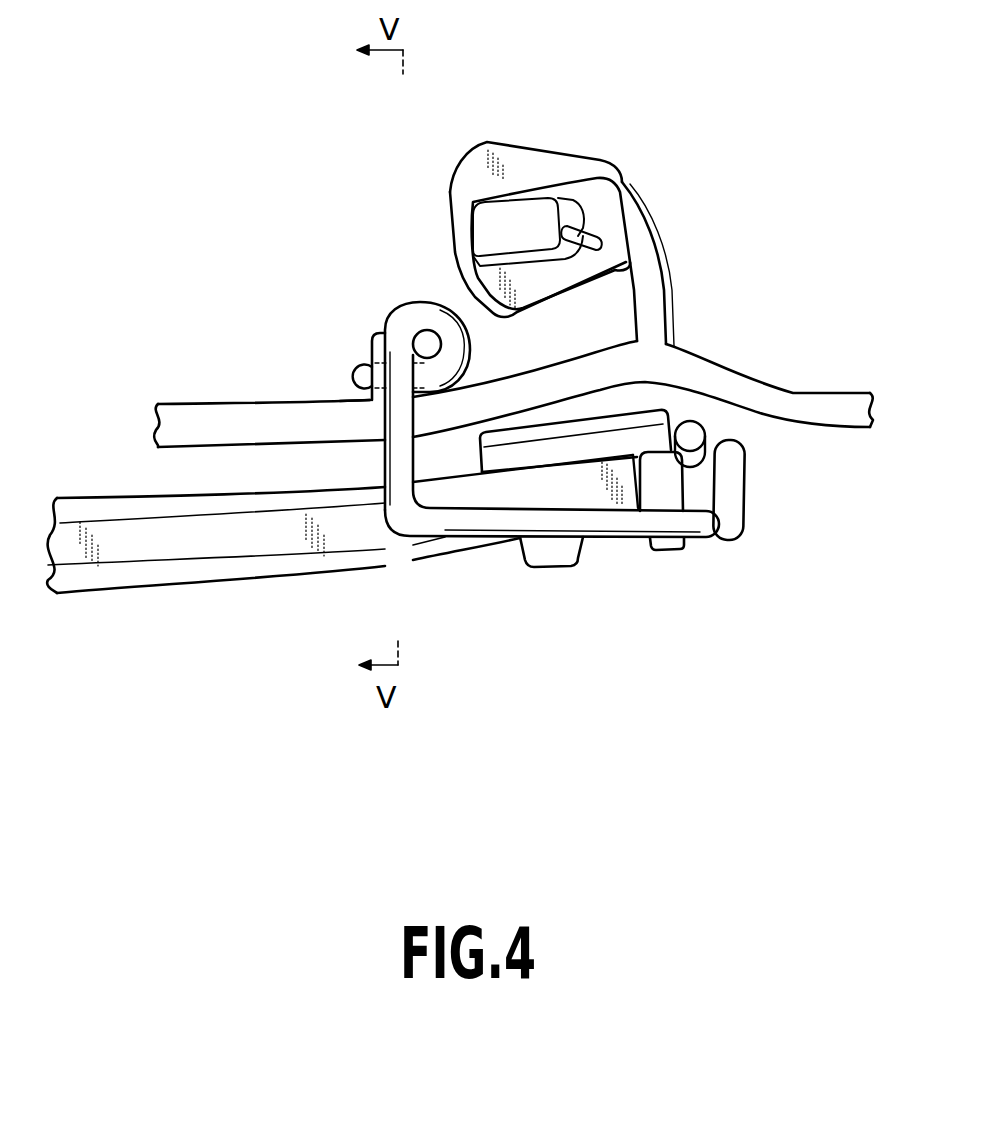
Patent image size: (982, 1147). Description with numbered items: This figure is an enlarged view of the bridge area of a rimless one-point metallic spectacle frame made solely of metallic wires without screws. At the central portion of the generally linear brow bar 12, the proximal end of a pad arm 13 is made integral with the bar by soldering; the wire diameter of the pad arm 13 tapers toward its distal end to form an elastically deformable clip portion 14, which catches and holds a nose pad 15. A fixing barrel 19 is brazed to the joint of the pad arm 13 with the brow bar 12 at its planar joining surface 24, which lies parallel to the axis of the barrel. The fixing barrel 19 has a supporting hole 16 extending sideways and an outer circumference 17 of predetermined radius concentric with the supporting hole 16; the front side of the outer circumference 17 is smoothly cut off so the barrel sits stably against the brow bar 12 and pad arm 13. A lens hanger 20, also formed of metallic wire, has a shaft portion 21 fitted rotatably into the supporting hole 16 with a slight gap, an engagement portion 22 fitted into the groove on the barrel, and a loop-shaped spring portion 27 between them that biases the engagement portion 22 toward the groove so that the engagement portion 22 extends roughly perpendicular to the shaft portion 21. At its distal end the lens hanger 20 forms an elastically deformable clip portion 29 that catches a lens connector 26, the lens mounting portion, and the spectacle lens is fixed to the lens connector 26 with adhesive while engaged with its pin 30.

The brow bar 12 is at (823, 393).
The pad arm 13 is at (660, 318).
The clip portion 14 is at (522, 190).
The nose pad 15 is at (468, 172).
The supporting hole 16 is at (367, 361).
The outer circumference 17 is at (372, 324).
The fixing barrel 19 is at (433, 347).
The lens hanger 20 is at (410, 517).
The shaft portion 21 is at (356, 368).
The engagement portion 22 is at (397, 378).
The joining surface 24 is at (376, 403).
The lens connector 26 is at (587, 440).
The spring portion 27 is at (437, 313).
The clip portion 29 is at (692, 433).
The pin 30 is at (543, 557).